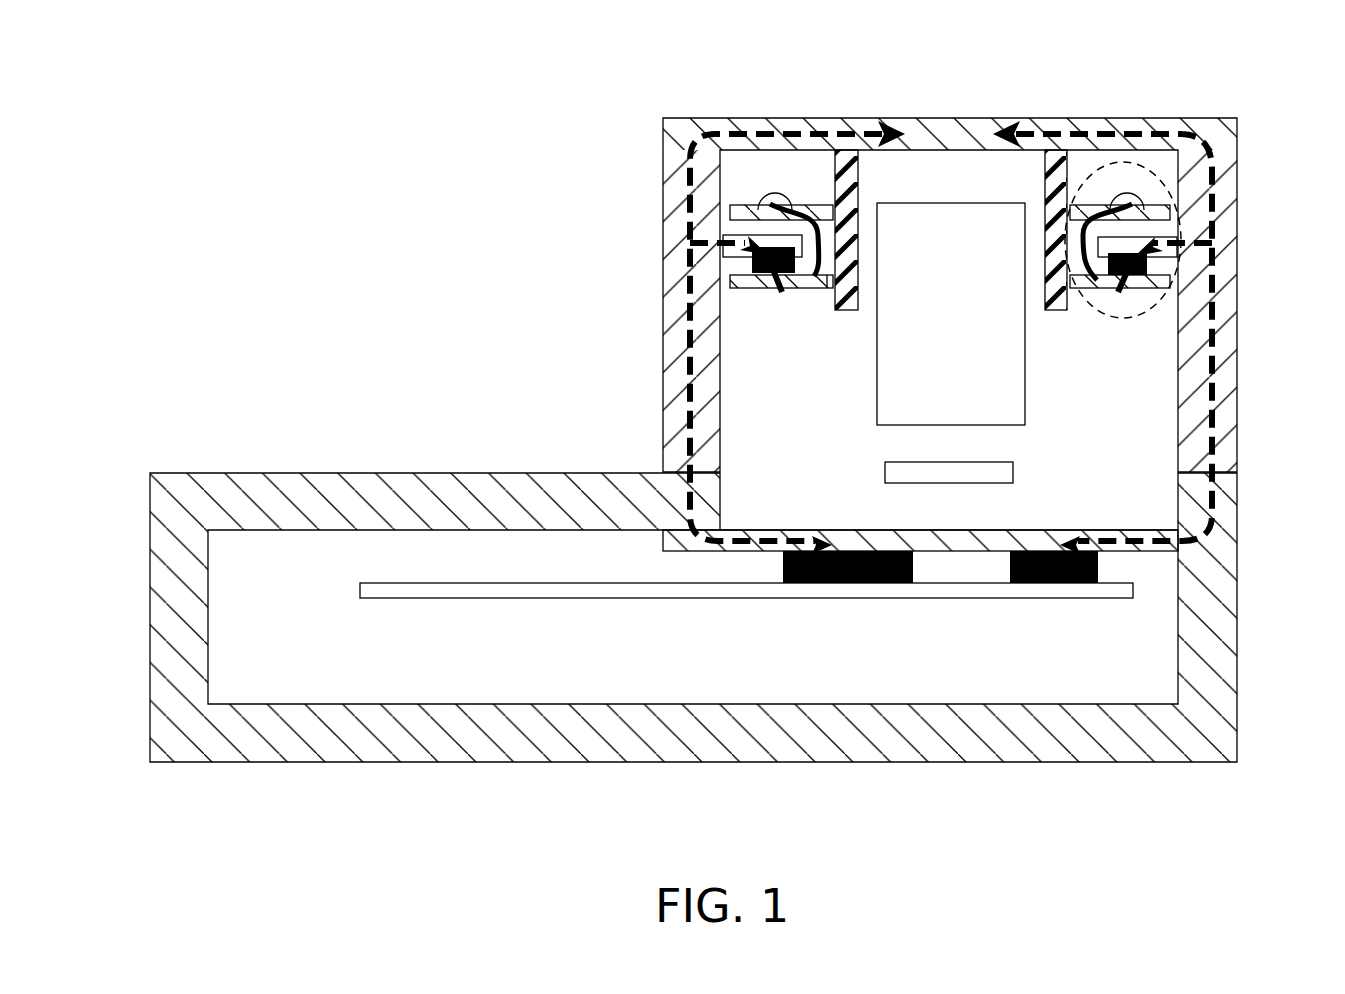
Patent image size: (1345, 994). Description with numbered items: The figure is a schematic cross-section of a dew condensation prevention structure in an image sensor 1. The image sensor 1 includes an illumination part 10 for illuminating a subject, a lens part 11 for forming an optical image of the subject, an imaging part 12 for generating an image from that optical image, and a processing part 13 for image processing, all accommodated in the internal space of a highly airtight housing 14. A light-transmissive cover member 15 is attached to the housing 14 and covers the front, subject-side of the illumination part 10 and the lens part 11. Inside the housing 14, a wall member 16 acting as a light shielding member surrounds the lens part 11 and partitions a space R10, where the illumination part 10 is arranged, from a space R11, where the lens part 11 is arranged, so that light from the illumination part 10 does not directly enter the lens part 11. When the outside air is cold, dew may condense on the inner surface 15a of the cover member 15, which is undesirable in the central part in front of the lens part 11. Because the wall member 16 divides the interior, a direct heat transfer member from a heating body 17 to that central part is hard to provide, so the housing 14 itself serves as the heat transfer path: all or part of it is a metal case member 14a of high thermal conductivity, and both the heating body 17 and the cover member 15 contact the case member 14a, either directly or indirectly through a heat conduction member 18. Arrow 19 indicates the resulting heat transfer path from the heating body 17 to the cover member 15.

The image sensor 1 is at (428, 130).
The illumination part 10 is at (1150, 165).
The lens part 11 is at (1000, 380).
The imaging part 12 is at (1013, 470).
The processing part 13 is at (1137, 591).
The housing 14 is at (363, 472).
The case member 14a is at (663, 393).
The cover member 15 is at (1032, 118).
The inner surface 15a is at (985, 150).
The wall member 16 is at (835, 195).
The heating body 17 is at (750, 258).
The heat conduction member 18 is at (722, 247).
The arrow 19 is at (690, 180).
The space R10 is at (792, 187).
The space R11 is at (937, 187).